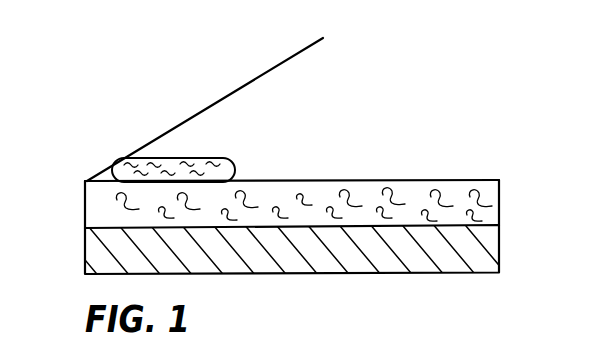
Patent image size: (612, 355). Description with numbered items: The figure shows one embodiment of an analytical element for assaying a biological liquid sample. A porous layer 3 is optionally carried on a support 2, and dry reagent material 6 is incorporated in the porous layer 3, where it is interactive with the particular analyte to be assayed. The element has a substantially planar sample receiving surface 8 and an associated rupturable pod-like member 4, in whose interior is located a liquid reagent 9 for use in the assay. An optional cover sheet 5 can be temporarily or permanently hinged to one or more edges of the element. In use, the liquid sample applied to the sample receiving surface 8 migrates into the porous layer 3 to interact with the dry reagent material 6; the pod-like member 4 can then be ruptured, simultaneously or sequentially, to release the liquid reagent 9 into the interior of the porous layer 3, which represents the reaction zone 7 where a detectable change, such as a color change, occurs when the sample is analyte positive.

The support 2 is at (500, 249).
The porous layer 3 is at (287, 198).
The rupturable pod-like member 4 is at (190, 157).
The cover sheet 5 is at (263, 75).
The dry reagent material 6 is at (158, 210).
The reaction zone 7 is at (328, 192).
The sample receiving surface 8 is at (412, 181).
The liquid reagent 9 is at (213, 168).